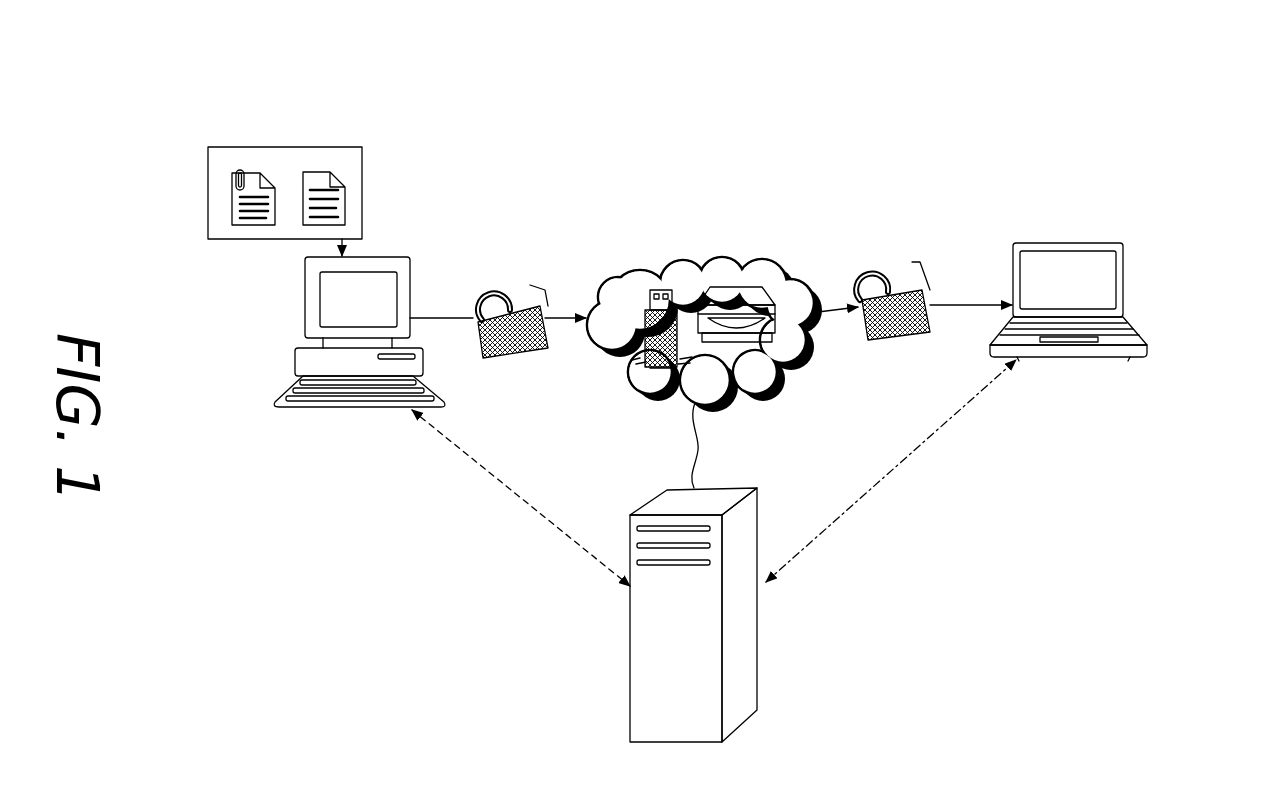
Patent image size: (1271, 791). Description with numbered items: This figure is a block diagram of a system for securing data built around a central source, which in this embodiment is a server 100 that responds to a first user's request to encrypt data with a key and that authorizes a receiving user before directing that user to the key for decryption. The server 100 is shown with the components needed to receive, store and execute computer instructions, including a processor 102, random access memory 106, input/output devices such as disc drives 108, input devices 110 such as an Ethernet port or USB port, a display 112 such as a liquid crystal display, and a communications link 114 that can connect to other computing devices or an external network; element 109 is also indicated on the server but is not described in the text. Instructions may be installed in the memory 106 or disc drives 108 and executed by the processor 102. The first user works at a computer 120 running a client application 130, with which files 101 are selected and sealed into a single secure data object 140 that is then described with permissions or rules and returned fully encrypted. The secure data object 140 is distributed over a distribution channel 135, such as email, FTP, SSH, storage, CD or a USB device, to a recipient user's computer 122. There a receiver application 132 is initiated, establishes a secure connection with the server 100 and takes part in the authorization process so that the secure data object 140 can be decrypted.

The server 100 is at (691, 624).
The files 101 is at (334, 145).
The processor 102 is at (644, 638).
The random access memory (RAM) 106 is at (641, 716).
The disc drives 108 is at (631, 562).
The storage module 109 is at (647, 659).
The input devices 110 is at (630, 546).
The display 112 is at (753, 706).
The communications link 114 is at (707, 455).
The computer 120 is at (315, 369).
The recipient user's computer 122 is at (1108, 332).
The client application 130 is at (330, 297).
The receiver application 132 is at (1113, 265).
The distribution channel 135 is at (717, 255).
The secure data object 140 is at (516, 274).